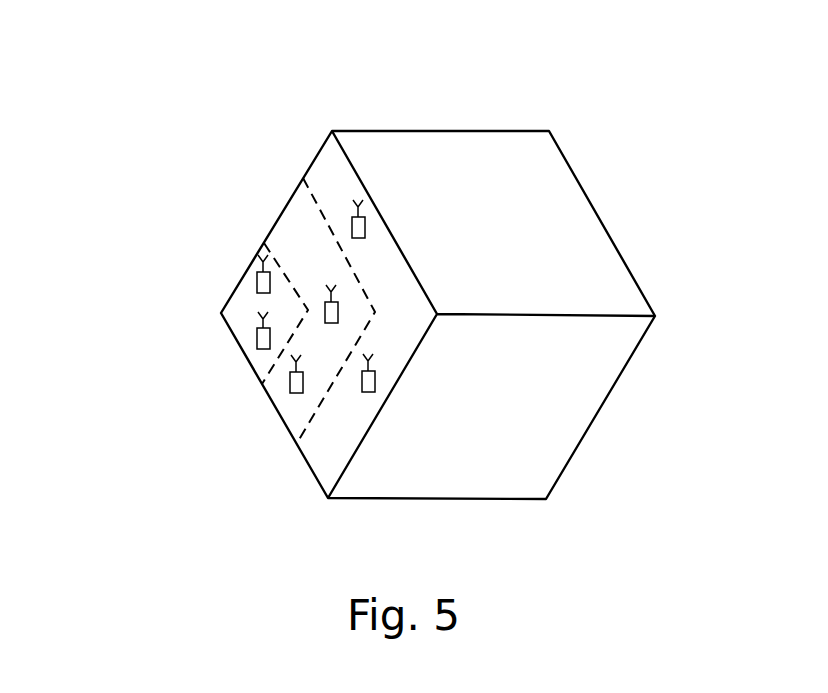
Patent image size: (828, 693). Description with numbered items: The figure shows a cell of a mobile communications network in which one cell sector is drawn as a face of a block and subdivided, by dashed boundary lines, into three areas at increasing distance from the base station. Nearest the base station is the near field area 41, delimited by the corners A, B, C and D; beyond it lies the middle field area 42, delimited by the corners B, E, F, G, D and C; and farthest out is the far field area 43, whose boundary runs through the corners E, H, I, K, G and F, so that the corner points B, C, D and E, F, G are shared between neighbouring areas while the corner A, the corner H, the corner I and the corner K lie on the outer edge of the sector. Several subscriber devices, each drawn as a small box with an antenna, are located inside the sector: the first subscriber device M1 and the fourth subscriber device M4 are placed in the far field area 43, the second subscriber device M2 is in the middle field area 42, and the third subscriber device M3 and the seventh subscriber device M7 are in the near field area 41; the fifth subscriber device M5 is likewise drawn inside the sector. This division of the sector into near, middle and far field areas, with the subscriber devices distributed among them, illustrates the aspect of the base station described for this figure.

The near field area 41 is at (247, 303).
The middle field area 42 is at (290, 232).
The far field area 43 is at (334, 176).
The first subscriber device M1 is at (365, 226).
The second subscriber device M2 is at (338, 309).
The third subscriber device M3 is at (257, 281).
The fourth subscriber device M4 is at (376, 382).
The fifth subscriber device M5 is at (257, 340).
The seventh subscriber device M7 is at (290, 384).
The corner A is at (221, 313).
The corner B is at (264, 243).
The corner C is at (308, 310).
The corner D is at (262, 384).
The corner E is at (303, 178).
The corner F is at (375, 312).
The corner G is at (297, 443).
The corner H is at (332, 131).
The corner point I is at (437, 314).
The corner K is at (328, 498).